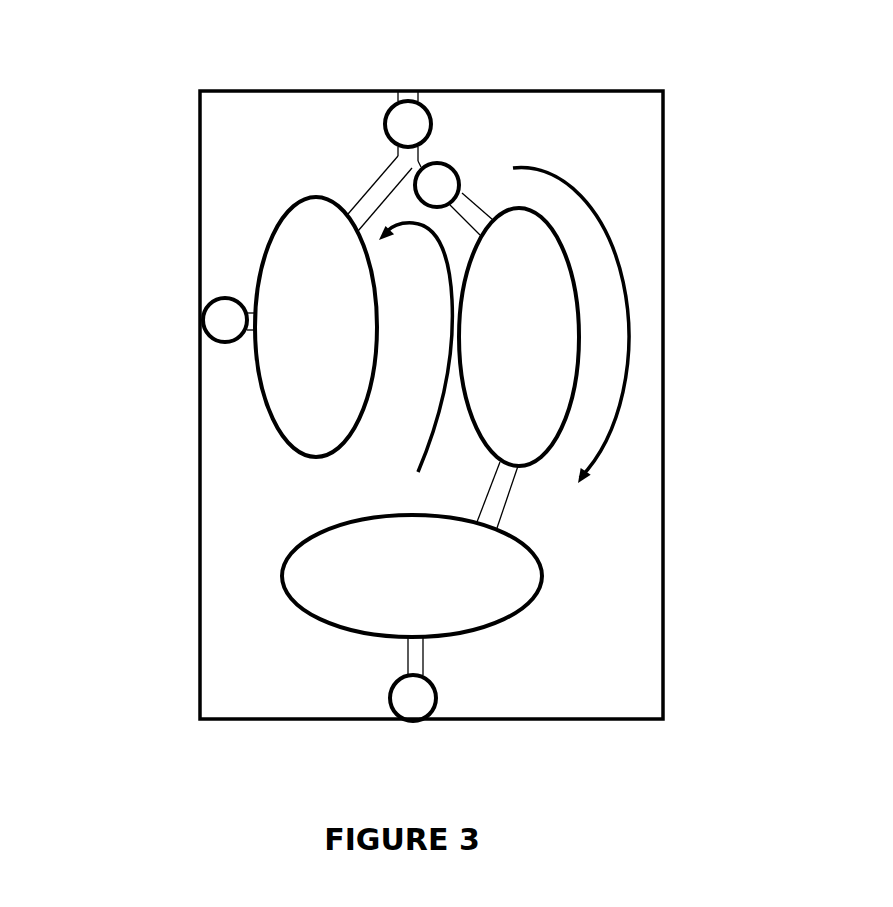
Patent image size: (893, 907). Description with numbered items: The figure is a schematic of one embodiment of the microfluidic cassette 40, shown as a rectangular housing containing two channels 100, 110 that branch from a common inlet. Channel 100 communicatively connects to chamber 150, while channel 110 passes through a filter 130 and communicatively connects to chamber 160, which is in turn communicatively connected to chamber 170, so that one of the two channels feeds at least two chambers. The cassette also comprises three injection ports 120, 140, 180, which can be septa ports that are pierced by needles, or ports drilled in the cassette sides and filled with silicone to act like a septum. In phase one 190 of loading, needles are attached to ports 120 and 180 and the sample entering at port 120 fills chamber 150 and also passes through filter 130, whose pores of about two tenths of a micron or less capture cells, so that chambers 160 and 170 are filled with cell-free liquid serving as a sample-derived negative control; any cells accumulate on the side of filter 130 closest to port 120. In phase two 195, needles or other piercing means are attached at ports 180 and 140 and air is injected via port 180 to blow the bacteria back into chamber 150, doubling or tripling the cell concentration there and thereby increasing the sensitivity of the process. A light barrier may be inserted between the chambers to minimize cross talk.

The cassette 40 is at (145, 160).
The channel 100 is at (362, 181).
The channel 110 is at (477, 194).
The injection port 120 is at (395, 89).
The filter 130 is at (454, 158).
The injection port 140 is at (202, 306).
The chamber 150 is at (270, 364).
The chamber 160 is at (549, 354).
The chamber 170 is at (520, 584).
The injection port 180 is at (427, 711).
The phase one 190 is at (571, 324).
The phase two 195 is at (415, 347).